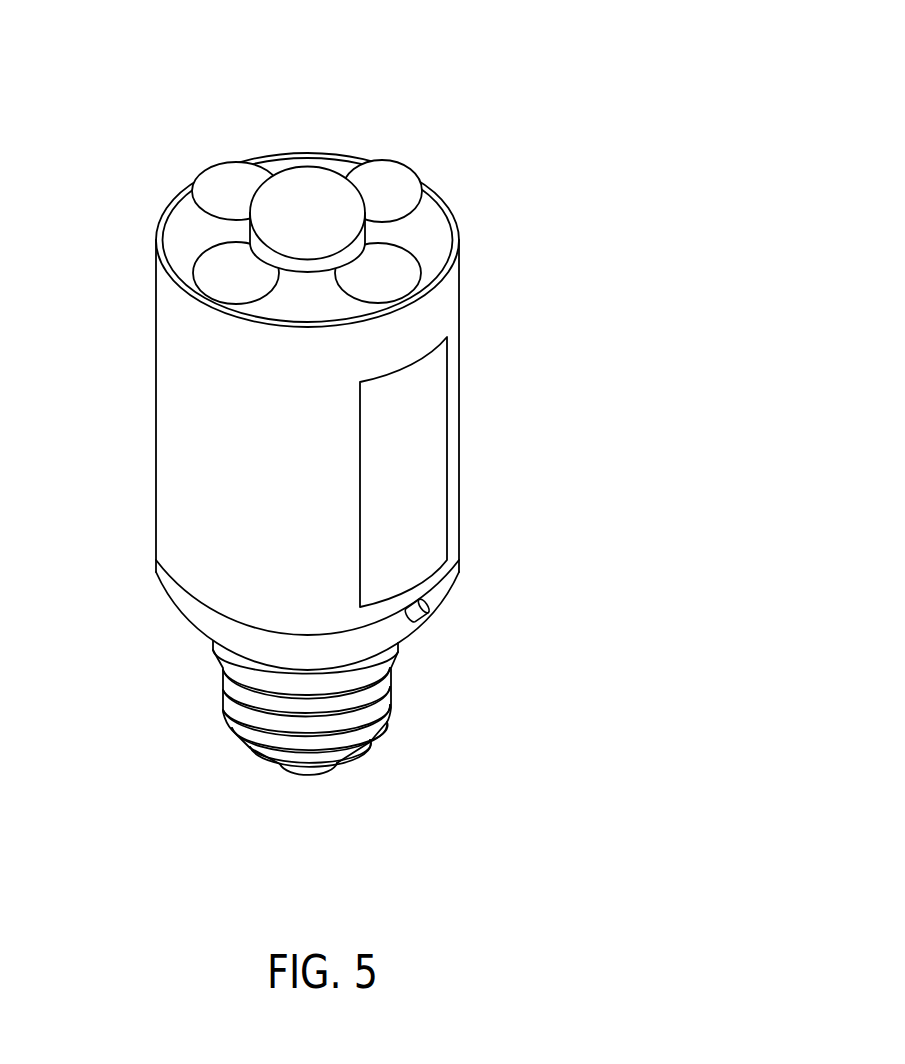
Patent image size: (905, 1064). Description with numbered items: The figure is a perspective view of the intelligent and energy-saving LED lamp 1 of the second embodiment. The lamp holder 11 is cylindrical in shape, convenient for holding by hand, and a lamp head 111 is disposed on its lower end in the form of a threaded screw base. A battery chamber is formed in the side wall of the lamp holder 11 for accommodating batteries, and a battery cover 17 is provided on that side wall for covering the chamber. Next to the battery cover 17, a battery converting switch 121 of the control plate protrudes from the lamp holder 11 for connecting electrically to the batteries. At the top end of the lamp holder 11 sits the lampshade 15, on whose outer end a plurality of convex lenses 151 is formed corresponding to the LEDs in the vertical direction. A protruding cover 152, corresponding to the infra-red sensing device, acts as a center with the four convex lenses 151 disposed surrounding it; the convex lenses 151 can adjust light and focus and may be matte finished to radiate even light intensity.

The LED lamp 1 is at (324, 444).
The lamp holder 11 is at (188, 470).
The lamp head 111 is at (313, 772).
The battery converting switch 121 is at (420, 635).
The lampshade 15 is at (427, 243).
The convex lenses 151 is at (395, 188).
The protruding cover 152 is at (322, 200).
The battery cover 17 is at (408, 493).